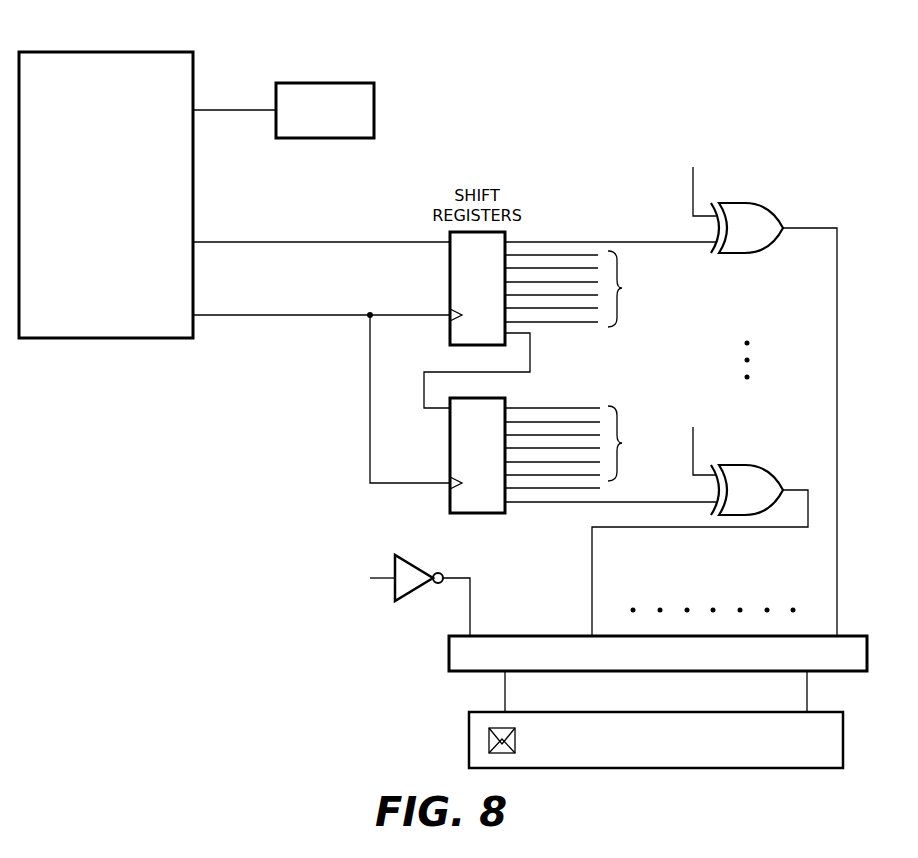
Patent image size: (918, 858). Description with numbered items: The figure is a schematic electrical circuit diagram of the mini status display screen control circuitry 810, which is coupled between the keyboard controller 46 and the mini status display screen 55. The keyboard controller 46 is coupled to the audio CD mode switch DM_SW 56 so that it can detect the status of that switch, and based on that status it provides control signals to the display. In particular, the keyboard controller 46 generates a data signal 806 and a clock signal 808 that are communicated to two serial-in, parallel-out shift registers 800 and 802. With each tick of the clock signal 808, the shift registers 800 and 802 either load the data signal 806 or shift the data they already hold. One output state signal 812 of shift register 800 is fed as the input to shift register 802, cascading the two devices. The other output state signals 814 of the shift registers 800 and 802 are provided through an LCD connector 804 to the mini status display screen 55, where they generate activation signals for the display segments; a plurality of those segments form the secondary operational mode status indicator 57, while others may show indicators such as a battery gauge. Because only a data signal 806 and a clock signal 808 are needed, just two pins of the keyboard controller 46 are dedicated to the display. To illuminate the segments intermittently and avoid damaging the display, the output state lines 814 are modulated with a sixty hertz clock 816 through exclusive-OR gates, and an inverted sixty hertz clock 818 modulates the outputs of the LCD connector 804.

The keyboard controller 46 is at (176, 52).
The audio CD mode switch DM_SW 56 is at (363, 83).
The data signal 806 is at (353, 242).
The clock signal 808 is at (355, 315).
The shift register 800 is at (477, 288).
The shift register 802 is at (477, 455).
The output state signal 812 is at (530, 364).
The output state signals 814 is at (610, 376).
The 60 Hz clock 816 is at (757, 207).
The inverted 60 Hz clock signal 818 is at (410, 561).
The LCD connector 804 is at (532, 636).
The mini status display screen 55 is at (478, 712).
The secondary operational mode status indicator 57 is at (517, 745).
The mini status display screen control circuitry 810 is at (686, 74).